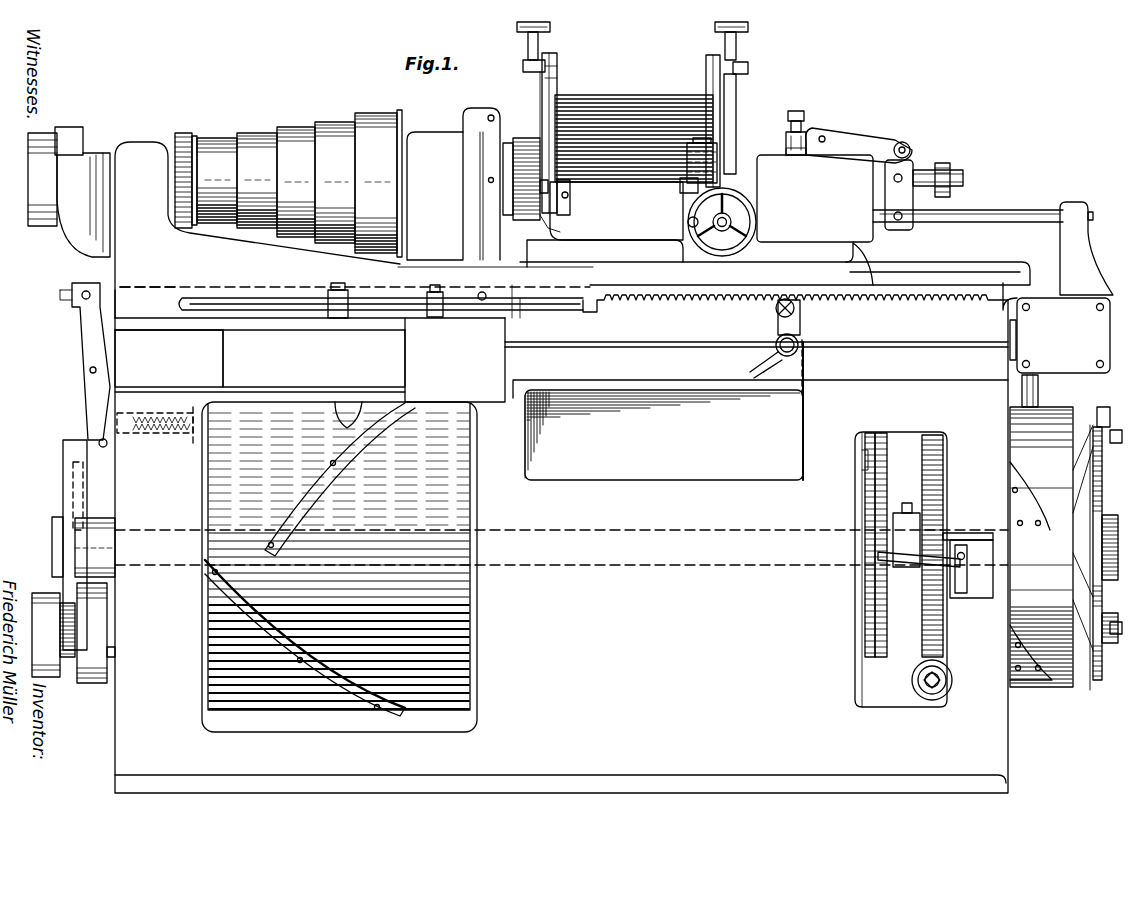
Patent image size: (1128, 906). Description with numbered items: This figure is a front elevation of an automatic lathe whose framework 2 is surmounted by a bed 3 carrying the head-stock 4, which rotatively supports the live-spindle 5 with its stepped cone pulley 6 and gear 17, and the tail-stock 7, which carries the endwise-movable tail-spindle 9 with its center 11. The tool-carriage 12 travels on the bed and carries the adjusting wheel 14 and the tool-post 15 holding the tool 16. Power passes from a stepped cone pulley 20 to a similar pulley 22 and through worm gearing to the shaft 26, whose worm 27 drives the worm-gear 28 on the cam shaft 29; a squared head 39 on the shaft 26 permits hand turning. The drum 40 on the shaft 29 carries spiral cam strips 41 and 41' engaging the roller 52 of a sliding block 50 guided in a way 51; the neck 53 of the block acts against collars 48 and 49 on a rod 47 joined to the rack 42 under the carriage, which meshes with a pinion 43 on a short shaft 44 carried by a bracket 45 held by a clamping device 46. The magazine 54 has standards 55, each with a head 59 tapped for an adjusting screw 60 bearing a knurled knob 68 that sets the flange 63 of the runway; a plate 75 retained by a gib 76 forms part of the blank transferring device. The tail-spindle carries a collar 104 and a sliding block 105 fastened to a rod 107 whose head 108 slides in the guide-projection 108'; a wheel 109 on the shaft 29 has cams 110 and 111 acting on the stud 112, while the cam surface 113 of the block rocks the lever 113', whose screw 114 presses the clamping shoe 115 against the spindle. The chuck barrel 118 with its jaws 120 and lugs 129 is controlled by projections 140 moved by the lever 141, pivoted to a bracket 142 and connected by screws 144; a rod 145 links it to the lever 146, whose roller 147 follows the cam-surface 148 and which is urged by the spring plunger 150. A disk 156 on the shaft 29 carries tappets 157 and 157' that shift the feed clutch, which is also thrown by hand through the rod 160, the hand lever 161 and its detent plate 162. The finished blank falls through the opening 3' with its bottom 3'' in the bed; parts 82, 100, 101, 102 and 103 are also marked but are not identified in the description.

The framework 2 is at (561, 540).
The bed 3 is at (756, 395).
The opening 3' is at (745, 435).
The bottom of the opening 3'' is at (664, 435).
The head-stock 4 is at (310, 267).
The live-spindle 5 is at (513, 180).
The stepped cone pulley 6 is at (299, 183).
The tail-stock 7 is at (815, 198).
The tail-spindle 9 is at (932, 170).
The center 11 is at (752, 135).
The tool-carriage 12 is at (775, 233).
The adjusting wheel 14 is at (740, 252).
The tool-post 15 is at (697, 165).
The tool 16 is at (681, 188).
The gear 17 is at (183, 133).
The stepped cone pulley 20 is at (62, 145).
The stepped pulley 22 is at (98, 652).
The rotary shaft 26 is at (930, 686).
The worm 27 is at (934, 690).
The worm-gear 28 is at (938, 468).
The shaft 29 is at (683, 566).
The squared head 39 is at (926, 682).
The drum 40 is at (452, 712).
The peripheral cam 41 is at (340, 479).
The peripheral cam 41' is at (276, 638).
The rack 42 is at (640, 300).
The pinion 43 is at (798, 308).
The short shaft 44 is at (794, 295).
The bracket 45 is at (570, 197).
The clamping device 46 is at (628, 190).
The rod 47 is at (532, 297).
The adjustable collar 48 is at (338, 318).
The adjustable collar 49 is at (435, 318).
The sliding block 50 is at (314, 358).
The way 51 is at (169, 358).
The anti-friction roller 52 is at (345, 428).
The neck 53 is at (352, 296).
The magazine 54 is at (718, 75).
The standard 55 is at (533, 132).
The head 59 is at (556, 77).
The adjusting screw 60 is at (528, 62).
The flange 63 is at (553, 67).
The knob 68 is at (548, 30).
The plate 75 is at (548, 220).
The gib 76 is at (566, 206).
The roller shaft 82 is at (570, 195).
The bracket 100 is at (855, 448).
The bracket lip 101 is at (862, 462).
The gear 102 is at (866, 542).
The gear hub 103 is at (877, 655).
The collar 104 is at (948, 163).
The block 105 is at (905, 201).
The rod 107 is at (990, 222).
The head 108 is at (1070, 222).
The guide-projection 108' is at (1056, 328).
The wheel 109 is at (1010, 462).
The cam 110 is at (1064, 408).
The cam 111 is at (1012, 470).
The anti-friction roller 112 is at (1022, 388).
The cam surface 113 is at (905, 155).
The lever 113' is at (859, 121).
The screw 114 is at (796, 110).
The clamping shoe 115 is at (792, 160).
The barrel 118 is at (578, 285).
The jaws 120 is at (565, 190).
The lugs 129 is at (512, 285).
The projections 140 is at (502, 152).
The lever 141 is at (490, 256).
The bracket 142 is at (467, 120).
The screws 144 is at (488, 182).
The rod 145 is at (157, 292).
The lever 146 is at (88, 323).
The anti-friction roller 147 is at (106, 448).
The cam-surface 148 is at (84, 500).
The spring plunger 150 is at (108, 420).
The disk 156 is at (1095, 673).
The tappet 157 is at (1064, 450).
The tappet 157' is at (1085, 660).
The rod 160 is at (978, 598).
The hand lever 161 is at (886, 556).
The detent plate 162 is at (978, 533).